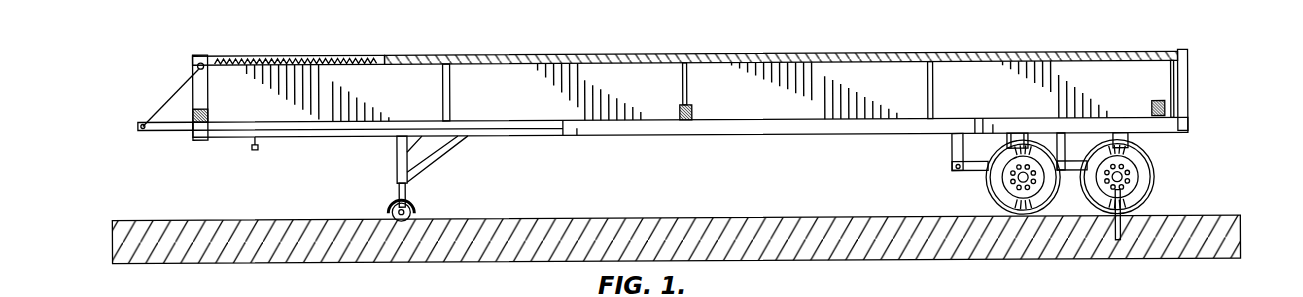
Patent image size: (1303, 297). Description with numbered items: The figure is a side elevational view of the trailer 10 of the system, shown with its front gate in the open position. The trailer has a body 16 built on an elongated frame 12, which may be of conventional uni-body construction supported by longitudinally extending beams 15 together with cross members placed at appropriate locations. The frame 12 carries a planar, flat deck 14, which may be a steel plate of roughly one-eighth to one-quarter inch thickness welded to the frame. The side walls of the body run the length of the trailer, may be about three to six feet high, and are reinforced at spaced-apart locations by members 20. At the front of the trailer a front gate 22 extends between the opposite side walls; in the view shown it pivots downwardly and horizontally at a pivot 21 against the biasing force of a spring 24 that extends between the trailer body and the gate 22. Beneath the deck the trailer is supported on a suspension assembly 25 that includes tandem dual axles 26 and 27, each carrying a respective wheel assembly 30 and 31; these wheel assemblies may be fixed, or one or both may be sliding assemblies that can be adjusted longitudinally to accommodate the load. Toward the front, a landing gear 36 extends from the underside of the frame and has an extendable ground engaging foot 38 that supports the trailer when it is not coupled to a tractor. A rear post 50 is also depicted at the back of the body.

The trailer 10 is at (886, 29).
The frame 12 is at (562, 136).
The deck 14 is at (768, 109).
The longitudinally extending beams 15 is at (815, 136).
The body 16 is at (740, 103).
The reinforcing members 20 is at (451, 71).
The pivot 21 is at (207, 134).
The front gate 22 is at (158, 128).
The spring 24 is at (320, 61).
The suspension assembly 25 is at (962, 182).
The axle 26 is at (1125, 174).
The axle 27 is at (1018, 174).
The wheel assembly 30 is at (1150, 190).
The wheel assembly 31 is at (990, 191).
The landing gear 36 is at (397, 189).
The ground engaging foot 38 is at (412, 204).
The rear post 50 is at (1189, 81).